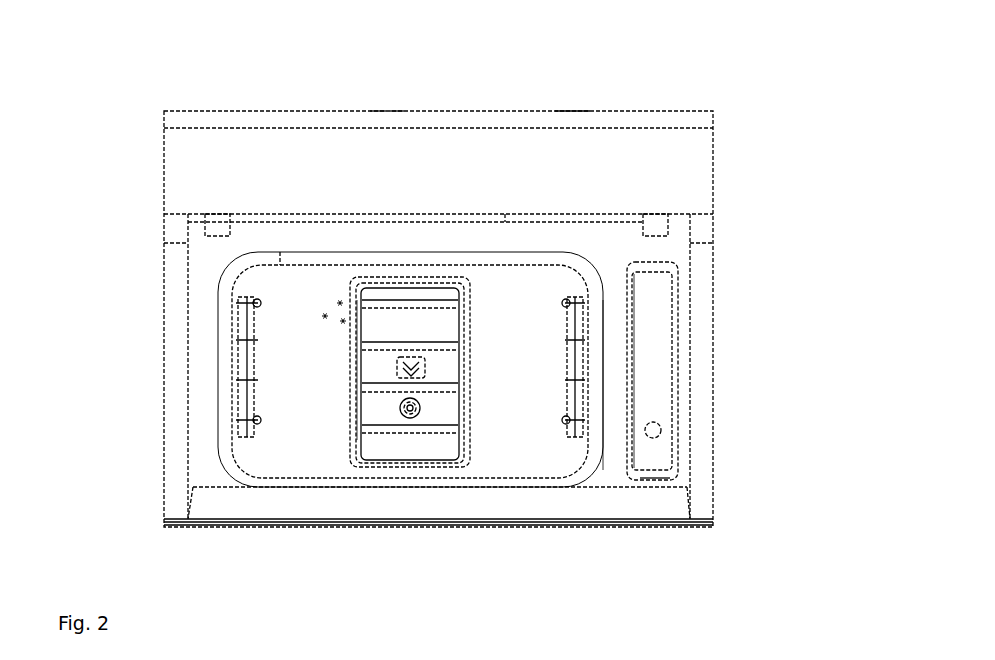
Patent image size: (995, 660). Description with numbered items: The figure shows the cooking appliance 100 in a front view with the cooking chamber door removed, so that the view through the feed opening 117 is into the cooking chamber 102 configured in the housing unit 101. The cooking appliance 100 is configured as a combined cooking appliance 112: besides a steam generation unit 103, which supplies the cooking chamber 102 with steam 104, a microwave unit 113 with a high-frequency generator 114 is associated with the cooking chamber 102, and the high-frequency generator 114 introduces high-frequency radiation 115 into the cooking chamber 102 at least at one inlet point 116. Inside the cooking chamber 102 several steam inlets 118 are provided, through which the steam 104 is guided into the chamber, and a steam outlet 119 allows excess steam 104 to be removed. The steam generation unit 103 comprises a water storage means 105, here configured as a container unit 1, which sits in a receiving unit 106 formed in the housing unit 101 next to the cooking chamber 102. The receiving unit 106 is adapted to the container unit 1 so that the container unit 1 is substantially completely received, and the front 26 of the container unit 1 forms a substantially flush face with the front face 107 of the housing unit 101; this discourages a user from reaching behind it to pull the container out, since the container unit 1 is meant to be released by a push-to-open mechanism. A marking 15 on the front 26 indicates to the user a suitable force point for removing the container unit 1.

The cooking appliance 100 is at (120, 68).
The housing unit 101 is at (713, 195).
The cooking chamber 102 is at (283, 390).
The steam generation unit 103 is at (572, 110).
The steam 104 is at (318, 305).
The water storage means 105 is at (665, 330).
The receiving unit 106 is at (657, 480).
The front face 107 is at (617, 425).
The combined cooking appliance 112 is at (735, 70).
The microwave unit 113 is at (384, 110).
The high-frequency generator 114 is at (395, 110).
The high-frequency radiation 115 is at (397, 295).
The inlet point 116 is at (382, 320).
The feed opening 117 is at (548, 478).
The steam inlets 118 is at (362, 388).
The steam outlet 119 is at (407, 413).
The front 26 is at (655, 300).
The container unit 1 is at (660, 360).
The marking 15 is at (653, 385).